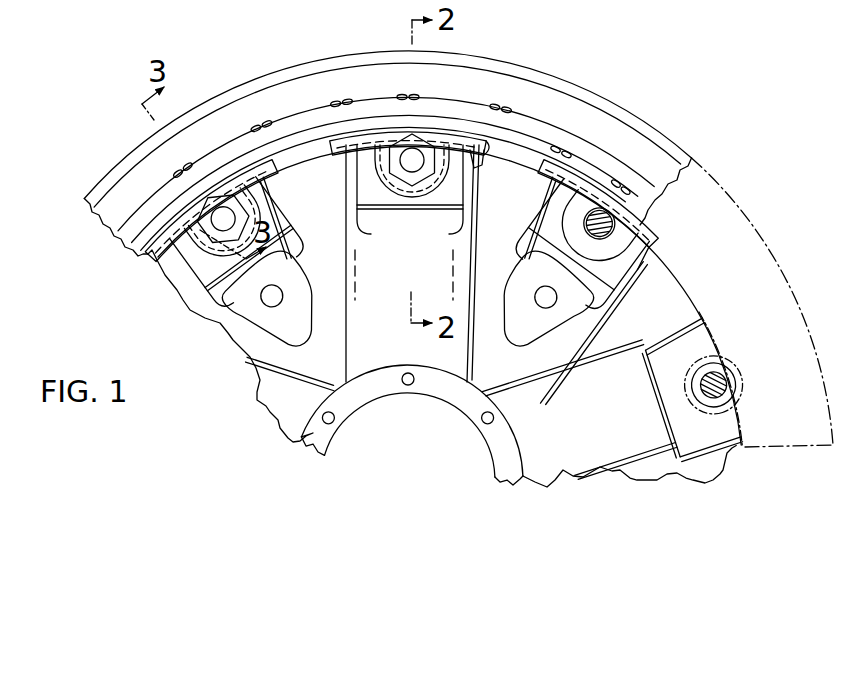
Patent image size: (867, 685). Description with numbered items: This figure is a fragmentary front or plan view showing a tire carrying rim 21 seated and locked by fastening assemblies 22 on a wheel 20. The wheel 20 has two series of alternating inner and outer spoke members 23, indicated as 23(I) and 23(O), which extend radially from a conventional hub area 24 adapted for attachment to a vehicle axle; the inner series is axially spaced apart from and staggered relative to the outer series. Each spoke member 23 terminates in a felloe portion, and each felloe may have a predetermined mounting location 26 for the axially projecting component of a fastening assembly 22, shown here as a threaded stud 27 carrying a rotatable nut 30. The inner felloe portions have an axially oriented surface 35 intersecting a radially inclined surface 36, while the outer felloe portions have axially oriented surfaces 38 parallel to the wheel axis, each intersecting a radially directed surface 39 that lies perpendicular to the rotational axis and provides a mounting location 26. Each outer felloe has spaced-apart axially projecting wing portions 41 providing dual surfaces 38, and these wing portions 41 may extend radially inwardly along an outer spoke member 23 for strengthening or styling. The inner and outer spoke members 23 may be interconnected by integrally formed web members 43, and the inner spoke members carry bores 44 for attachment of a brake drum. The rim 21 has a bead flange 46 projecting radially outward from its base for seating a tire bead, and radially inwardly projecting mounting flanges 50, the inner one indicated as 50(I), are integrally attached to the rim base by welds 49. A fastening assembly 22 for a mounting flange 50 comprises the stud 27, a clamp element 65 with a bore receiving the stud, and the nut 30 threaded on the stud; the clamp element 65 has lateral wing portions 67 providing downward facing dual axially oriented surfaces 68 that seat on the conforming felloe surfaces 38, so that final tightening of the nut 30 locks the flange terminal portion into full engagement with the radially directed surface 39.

The wheel 20 is at (246, 420).
The tire carrying rim 21 is at (610, 98).
The fastening assembly 22 is at (178, 171).
The spoke member 23 is at (458, 284).
The hub area 24 is at (357, 402).
The mounting location 26 is at (404, 143).
The threaded stud 27 is at (418, 172).
The nut 30 is at (356, 150).
The axially oriented surface 35 is at (572, 143).
The radially inclined surface 36 is at (660, 248).
The axially oriented surface 38 is at (383, 118).
The radially directed surface 39 is at (716, 366).
The wing portion 41 is at (694, 488).
The web member 43 is at (303, 183).
The bore 44 is at (578, 328).
The bead flange 46 is at (292, 72).
The weld 49 is at (338, 97).
The mounting flange 50 is at (655, 233).
The clamp element 65 is at (396, 190).
The lateral wing portion 67 is at (455, 134).
The axially oriented surface 68 is at (473, 162).